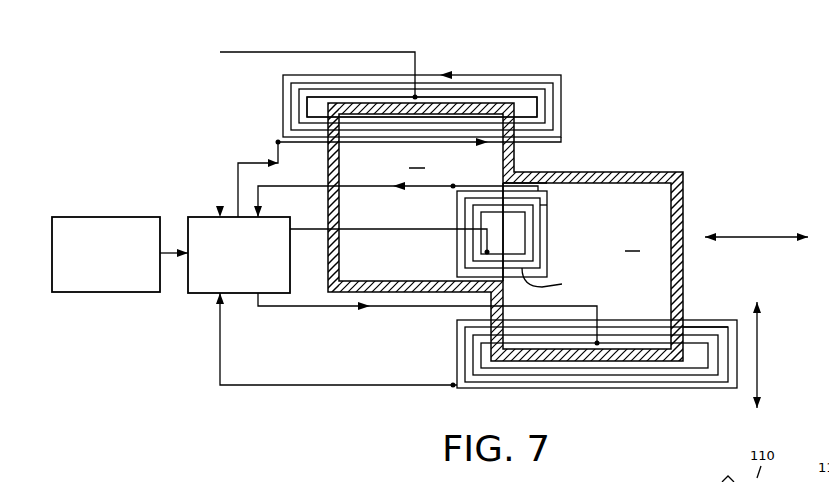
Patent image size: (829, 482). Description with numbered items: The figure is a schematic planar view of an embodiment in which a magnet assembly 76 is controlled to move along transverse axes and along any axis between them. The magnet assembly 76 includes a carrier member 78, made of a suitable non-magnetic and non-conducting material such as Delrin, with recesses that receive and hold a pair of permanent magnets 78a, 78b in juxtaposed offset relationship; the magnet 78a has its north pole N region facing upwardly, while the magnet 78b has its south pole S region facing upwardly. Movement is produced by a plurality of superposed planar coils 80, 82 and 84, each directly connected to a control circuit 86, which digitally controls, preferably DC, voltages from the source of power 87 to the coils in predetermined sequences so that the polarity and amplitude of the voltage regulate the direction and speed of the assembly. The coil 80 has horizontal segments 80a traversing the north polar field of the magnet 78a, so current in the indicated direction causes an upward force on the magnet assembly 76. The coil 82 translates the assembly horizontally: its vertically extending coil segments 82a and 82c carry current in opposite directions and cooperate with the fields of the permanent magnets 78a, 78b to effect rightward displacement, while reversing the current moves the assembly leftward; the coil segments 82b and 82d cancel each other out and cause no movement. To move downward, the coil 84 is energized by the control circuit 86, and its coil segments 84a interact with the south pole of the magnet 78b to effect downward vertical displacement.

The magnet assembly 76 is at (660, 148).
The carrier member 78 is at (684, 206).
The permanent magnet 78a is at (362, 162).
The permanent magnet 78b is at (650, 283).
The coil assembly 80 is at (373, 68).
The horizontal segments 80a is at (470, 136).
The coil assembly 82 is at (529, 179).
The coil segment 82a is at (461, 246).
The coil segment 82b is at (540, 181).
The coil segment 82c is at (537, 222).
The coil segment 82d is at (557, 280).
The coil assembly 84 is at (650, 392).
The coil segments 84a is at (700, 336).
The control circuit 86 is at (247, 296).
The source of power 87 is at (127, 294).